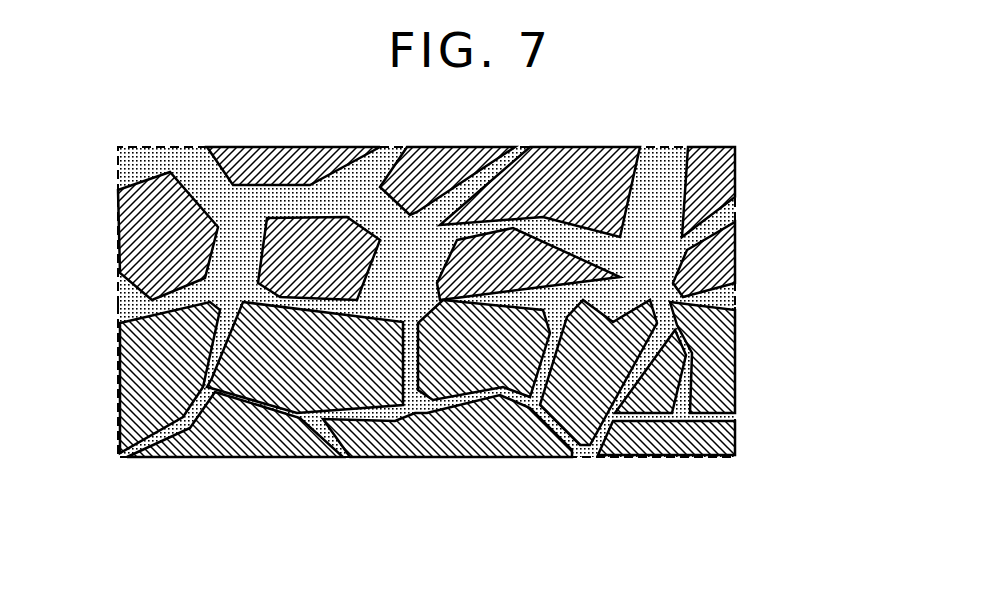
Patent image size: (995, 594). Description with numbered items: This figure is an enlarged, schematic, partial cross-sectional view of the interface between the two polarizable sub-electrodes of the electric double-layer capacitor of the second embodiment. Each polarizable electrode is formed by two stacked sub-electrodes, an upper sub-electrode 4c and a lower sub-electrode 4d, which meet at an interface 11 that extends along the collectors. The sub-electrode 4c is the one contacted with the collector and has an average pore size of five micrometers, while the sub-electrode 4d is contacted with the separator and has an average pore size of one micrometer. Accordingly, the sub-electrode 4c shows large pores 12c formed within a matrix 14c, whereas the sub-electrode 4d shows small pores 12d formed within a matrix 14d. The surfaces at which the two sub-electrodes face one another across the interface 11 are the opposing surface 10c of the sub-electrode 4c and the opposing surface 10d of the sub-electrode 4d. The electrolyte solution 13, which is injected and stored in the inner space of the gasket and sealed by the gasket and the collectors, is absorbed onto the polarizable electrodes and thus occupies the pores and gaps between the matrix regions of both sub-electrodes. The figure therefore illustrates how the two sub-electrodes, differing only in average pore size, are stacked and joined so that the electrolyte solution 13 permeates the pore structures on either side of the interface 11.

The sub-electrode 4c is at (745, 150).
The sub-electrode 4d is at (745, 448).
The opposing surface of sub-electrode 10c is at (150, 300).
The opposing surface of sub-electrode 10d is at (212, 303).
The interface 11 is at (120, 303).
The large pores 12c is at (412, 245).
The small pores 12d is at (490, 456).
The electrolyte solution 13 is at (317, 297).
The matrix 14c is at (720, 175).
The matrix 14d is at (720, 438).